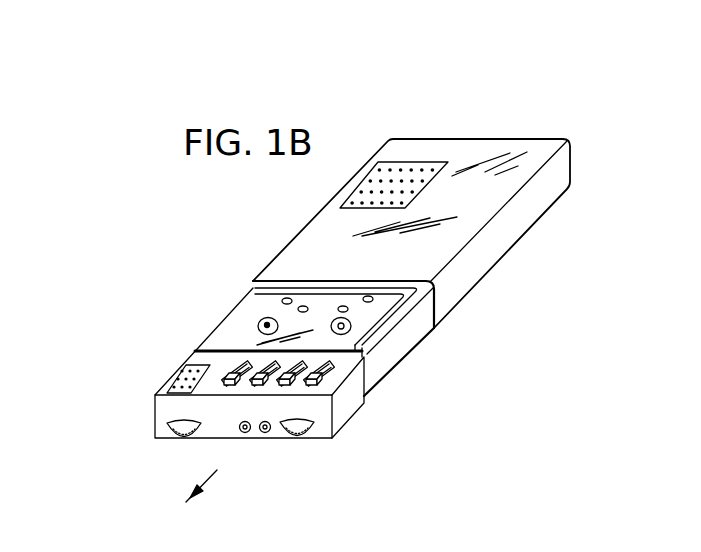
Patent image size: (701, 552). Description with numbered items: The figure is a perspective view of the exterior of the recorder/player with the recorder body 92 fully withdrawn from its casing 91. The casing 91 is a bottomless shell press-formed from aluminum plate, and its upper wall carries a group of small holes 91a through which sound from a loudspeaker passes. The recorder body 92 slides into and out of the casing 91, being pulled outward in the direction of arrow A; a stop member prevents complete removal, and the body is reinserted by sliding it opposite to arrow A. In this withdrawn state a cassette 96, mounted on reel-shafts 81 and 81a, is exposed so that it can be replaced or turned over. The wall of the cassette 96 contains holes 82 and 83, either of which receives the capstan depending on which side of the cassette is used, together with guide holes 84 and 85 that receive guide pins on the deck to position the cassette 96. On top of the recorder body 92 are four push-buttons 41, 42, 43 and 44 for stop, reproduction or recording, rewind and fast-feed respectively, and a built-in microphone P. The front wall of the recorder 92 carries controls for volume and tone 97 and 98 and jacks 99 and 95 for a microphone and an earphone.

The casing 91 is at (480, 138).
The group of small holes 91a is at (424, 189).
The reel-shaft 81 is at (264, 324).
The reel-shaft 81a is at (346, 328).
The hole 82 is at (282, 301).
The hole 83 is at (373, 297).
The guide hole 84 is at (305, 306).
The guide hole 85 is at (346, 306).
The cassette 96 is at (398, 327).
The recorder/player body 92 is at (153, 398).
The push-button 41 is at (226, 378).
The push-button 42 is at (254, 378).
The push-button 43 is at (282, 378).
The push-button 44 is at (308, 384).
The jack 95 is at (240, 433).
The jack 99 is at (266, 436).
The control for volume and tone 97 is at (181, 434).
The control for volume and tone 98 is at (298, 436).
The microphone P is at (175, 373).
The arrow A is at (205, 480).